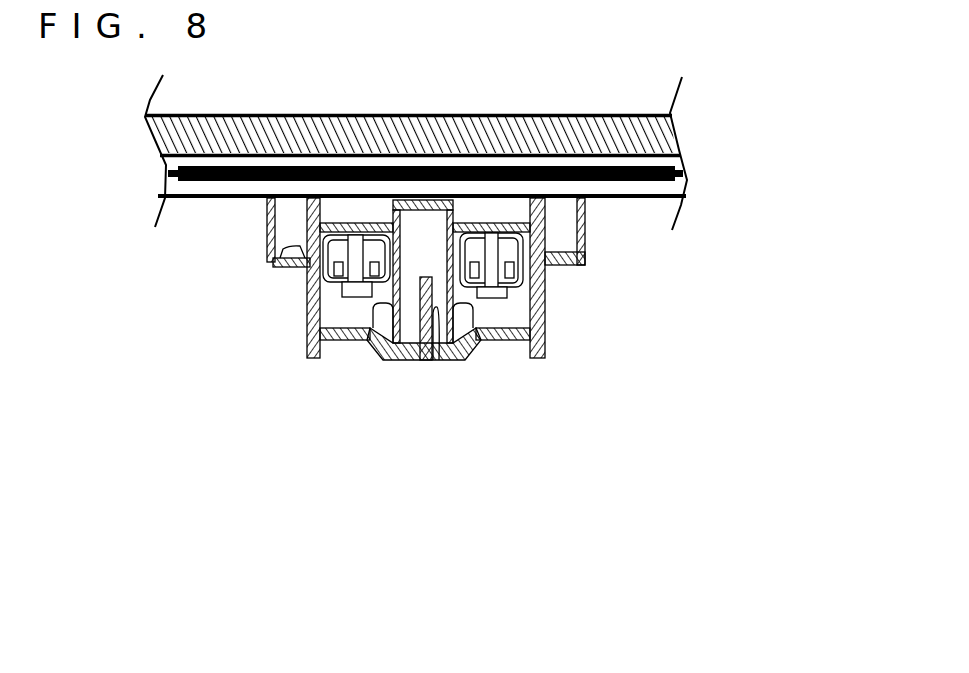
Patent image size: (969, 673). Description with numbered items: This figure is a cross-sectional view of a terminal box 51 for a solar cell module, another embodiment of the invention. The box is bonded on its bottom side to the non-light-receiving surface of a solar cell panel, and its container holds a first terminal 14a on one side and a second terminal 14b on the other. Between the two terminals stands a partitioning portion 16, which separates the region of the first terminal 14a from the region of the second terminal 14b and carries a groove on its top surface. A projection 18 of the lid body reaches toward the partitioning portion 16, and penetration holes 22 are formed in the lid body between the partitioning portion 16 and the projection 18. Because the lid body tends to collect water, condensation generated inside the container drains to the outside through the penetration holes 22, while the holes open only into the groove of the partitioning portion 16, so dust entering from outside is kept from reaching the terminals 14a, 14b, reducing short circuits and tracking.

The first terminal 14a is at (643, 264).
The second terminal 14b is at (211, 254).
The partitioning portion 16 is at (377, 355).
The projection 18 is at (432, 355).
The penetration hole 22 is at (405, 355).
The terminal box 51 is at (557, 403).